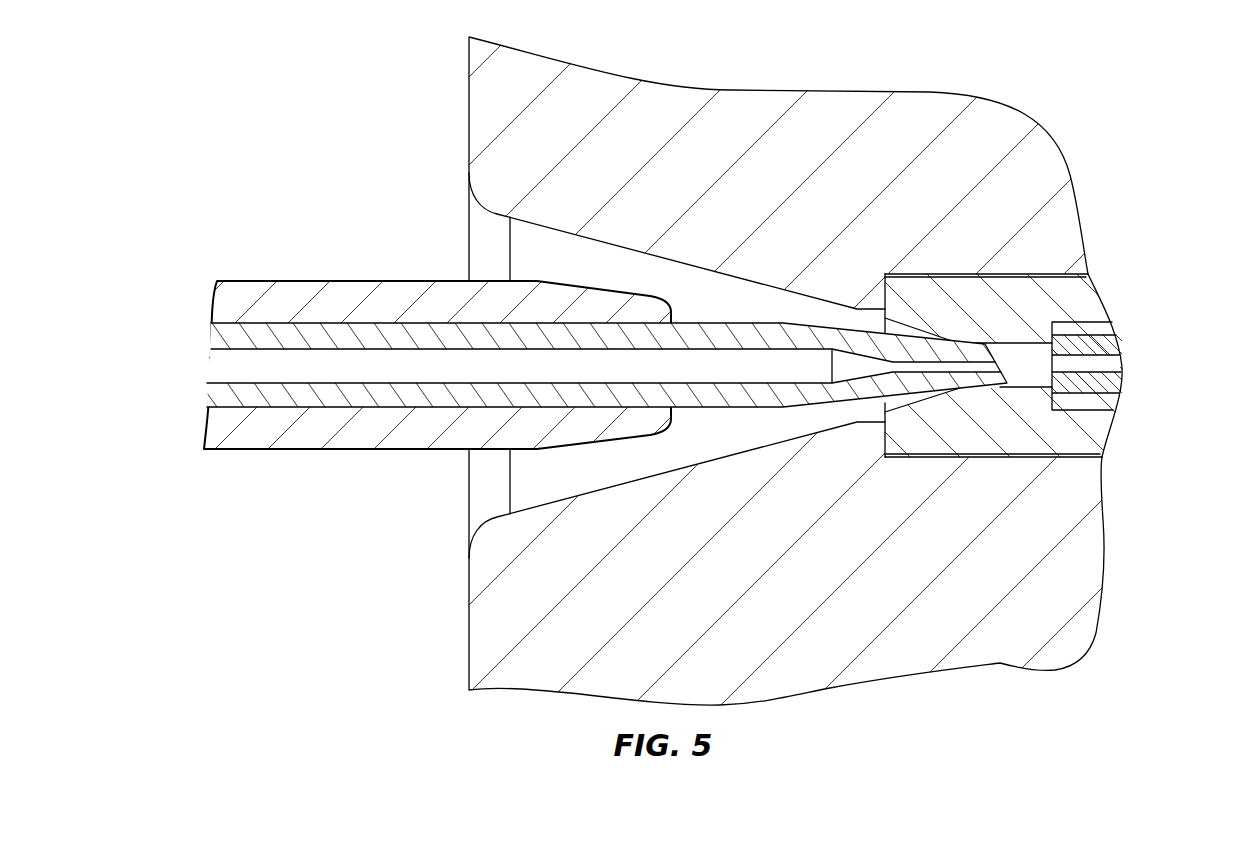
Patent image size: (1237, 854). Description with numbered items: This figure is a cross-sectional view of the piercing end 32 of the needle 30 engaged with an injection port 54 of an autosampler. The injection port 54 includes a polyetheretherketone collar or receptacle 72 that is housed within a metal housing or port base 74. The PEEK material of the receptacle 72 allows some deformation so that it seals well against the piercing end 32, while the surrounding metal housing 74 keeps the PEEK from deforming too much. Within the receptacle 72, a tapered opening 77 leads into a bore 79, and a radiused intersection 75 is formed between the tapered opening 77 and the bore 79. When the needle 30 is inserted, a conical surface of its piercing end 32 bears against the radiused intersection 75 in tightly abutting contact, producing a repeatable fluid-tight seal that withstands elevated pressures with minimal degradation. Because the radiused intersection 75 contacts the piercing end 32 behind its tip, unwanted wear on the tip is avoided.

The needle 30 is at (350, 262).
The piercing end 32 is at (768, 307).
The injection port 54 is at (1100, 212).
The PEEK collar or receptacle 72 is at (1022, 435).
The metal housing or port base 74 is at (1067, 548).
The radiused intersection 75 is at (957, 350).
The tapered opening 77 is at (911, 343).
The bore 79 is at (1037, 348).